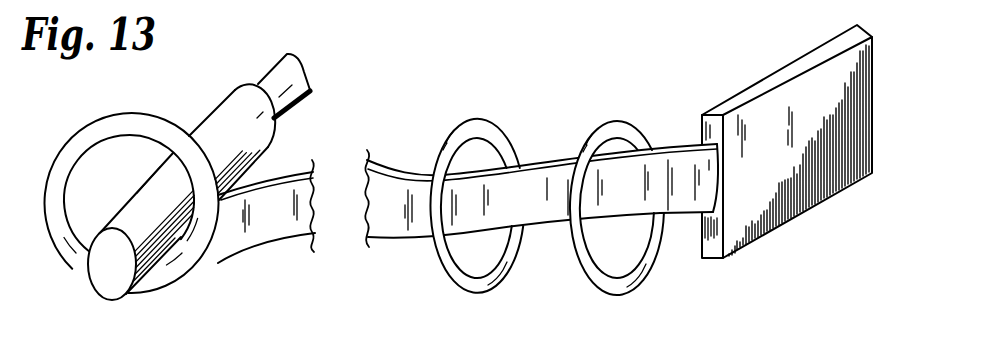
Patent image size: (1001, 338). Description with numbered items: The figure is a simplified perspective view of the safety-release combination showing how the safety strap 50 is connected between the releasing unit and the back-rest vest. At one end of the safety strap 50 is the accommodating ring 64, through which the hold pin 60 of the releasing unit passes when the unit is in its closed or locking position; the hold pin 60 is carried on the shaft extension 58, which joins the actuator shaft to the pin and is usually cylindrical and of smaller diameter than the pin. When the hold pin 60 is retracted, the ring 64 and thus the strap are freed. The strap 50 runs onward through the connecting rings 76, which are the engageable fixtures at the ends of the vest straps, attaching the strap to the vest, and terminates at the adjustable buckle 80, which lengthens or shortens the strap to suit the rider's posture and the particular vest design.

The safety strap 50 is at (262, 230).
The shaft extension 58 is at (270, 80).
The hold pin 60 is at (275, 148).
The accommodating ring 64 is at (105, 116).
The connecting rings 76 is at (477, 127).
The adjustable buckle 80 is at (766, 232).